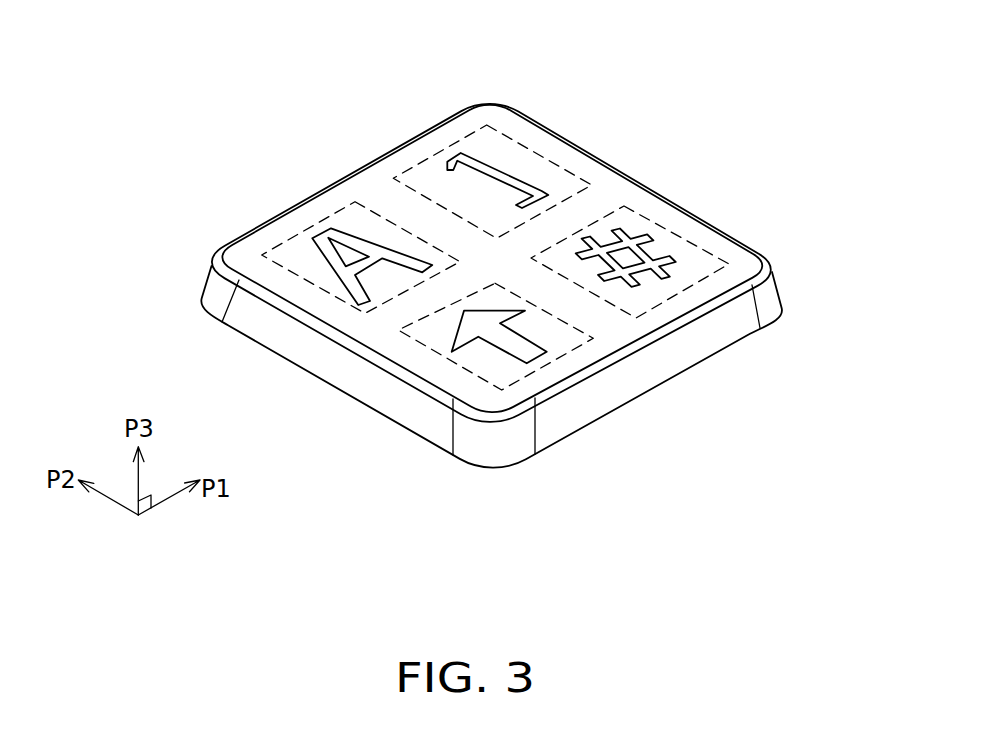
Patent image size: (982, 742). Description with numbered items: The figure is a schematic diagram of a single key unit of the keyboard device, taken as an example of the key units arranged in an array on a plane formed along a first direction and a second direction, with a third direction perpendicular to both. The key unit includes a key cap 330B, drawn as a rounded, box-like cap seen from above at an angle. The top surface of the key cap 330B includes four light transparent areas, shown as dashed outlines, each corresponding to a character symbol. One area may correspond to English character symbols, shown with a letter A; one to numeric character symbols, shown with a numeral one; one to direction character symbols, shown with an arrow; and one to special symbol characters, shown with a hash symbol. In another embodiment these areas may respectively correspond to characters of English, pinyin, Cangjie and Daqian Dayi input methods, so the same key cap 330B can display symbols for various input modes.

The key cap 330B is at (487, 104).